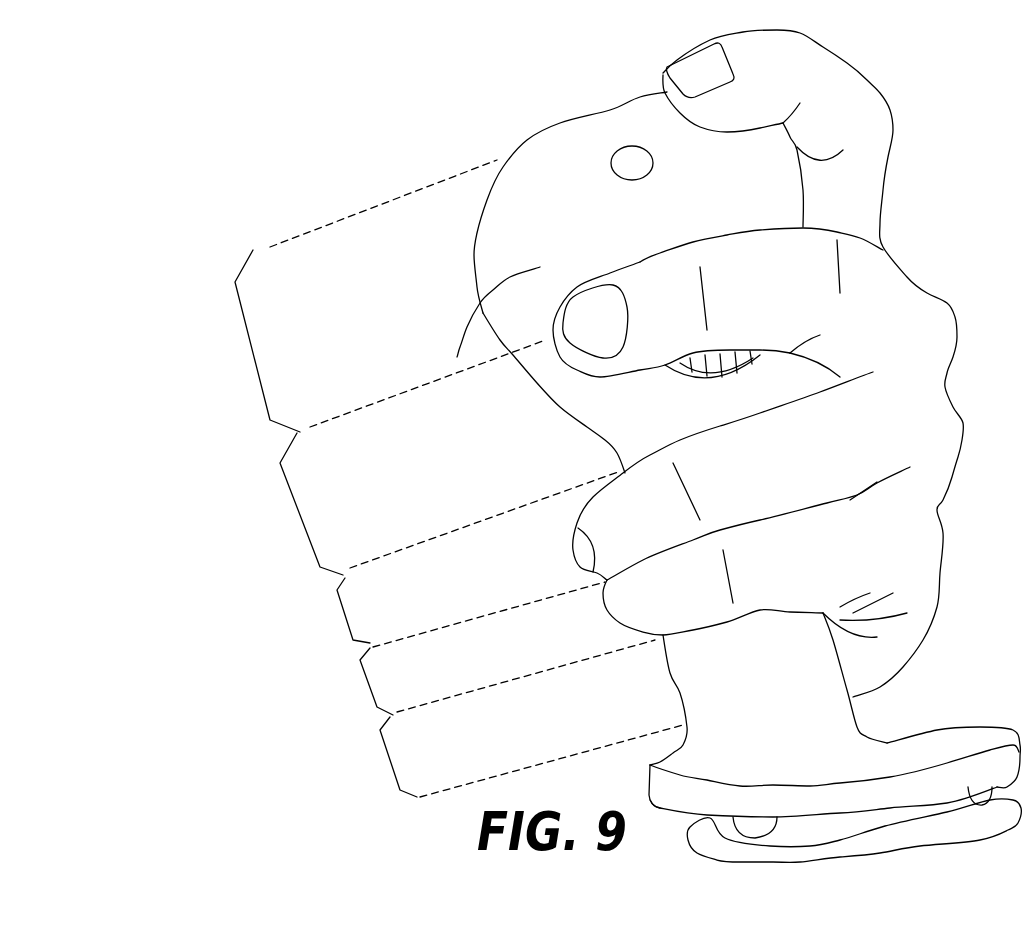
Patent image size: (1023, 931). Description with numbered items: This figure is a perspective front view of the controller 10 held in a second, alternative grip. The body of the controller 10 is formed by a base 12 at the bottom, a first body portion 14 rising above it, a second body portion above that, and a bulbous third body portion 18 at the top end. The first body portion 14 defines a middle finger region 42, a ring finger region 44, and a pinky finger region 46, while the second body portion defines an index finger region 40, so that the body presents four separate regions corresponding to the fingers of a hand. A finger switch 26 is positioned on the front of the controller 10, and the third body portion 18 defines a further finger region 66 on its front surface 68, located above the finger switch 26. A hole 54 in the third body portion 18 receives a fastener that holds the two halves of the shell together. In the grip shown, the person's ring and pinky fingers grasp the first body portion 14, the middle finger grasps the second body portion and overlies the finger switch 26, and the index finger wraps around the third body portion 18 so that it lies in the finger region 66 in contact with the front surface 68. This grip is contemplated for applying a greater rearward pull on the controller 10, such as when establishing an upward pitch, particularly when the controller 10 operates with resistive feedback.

The controller 10 is at (578, 101).
The base 12 is at (950, 745).
The first body portion 14 is at (718, 665).
The third body portion 18 is at (777, 195).
The finger switch 26 is at (604, 438).
The index finger region 40 is at (308, 540).
The middle finger region 42 is at (342, 612).
The ring finger region 44 is at (367, 687).
The pinky finger region 46 is at (390, 773).
The hole 54 is at (612, 164).
The finger region 66 is at (255, 362).
The front surface 68 is at (457, 357).